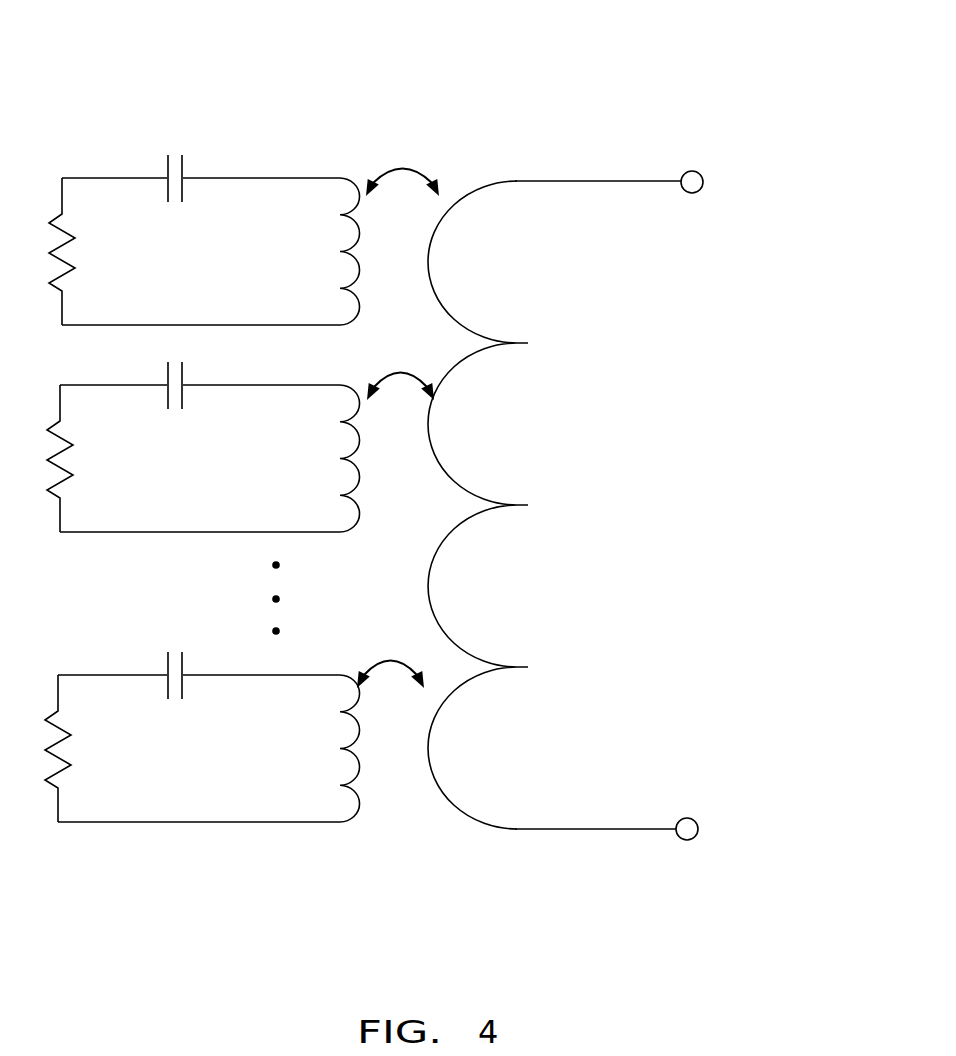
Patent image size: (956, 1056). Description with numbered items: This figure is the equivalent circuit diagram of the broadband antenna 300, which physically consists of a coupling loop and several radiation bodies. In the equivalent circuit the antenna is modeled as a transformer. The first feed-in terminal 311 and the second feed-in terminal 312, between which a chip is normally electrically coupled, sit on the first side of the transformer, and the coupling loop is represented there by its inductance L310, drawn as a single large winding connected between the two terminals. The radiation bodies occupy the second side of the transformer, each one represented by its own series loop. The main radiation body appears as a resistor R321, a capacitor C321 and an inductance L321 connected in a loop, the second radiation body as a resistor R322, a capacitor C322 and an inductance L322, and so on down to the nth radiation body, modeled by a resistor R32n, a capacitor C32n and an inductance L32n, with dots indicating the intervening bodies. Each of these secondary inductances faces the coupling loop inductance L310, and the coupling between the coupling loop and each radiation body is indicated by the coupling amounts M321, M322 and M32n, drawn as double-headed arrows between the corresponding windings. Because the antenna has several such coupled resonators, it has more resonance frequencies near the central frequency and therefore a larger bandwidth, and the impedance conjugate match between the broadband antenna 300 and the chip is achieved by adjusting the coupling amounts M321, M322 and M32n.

The broadband antenna 300 is at (807, 59).
The first feed-in terminal 311 is at (703, 182).
The second feed-in terminal 312 is at (698, 829).
The inductance of the coupling loop L310 is at (520, 505).
The capacitor C321 is at (201, 157).
The resistor R321 is at (102, 251).
The inductance L321 is at (211, 251).
The coupling amount M321 is at (403, 159).
The capacitor C322 is at (200, 371).
The resistor R322 is at (101, 458).
The inductance L322 is at (210, 458).
The coupling amount M322 is at (402, 361).
The capacitor C32n is at (199, 654).
The resistor R32n is at (98, 748).
The inductance L32n is at (209, 748).
The coupling amount M32n is at (390, 649).